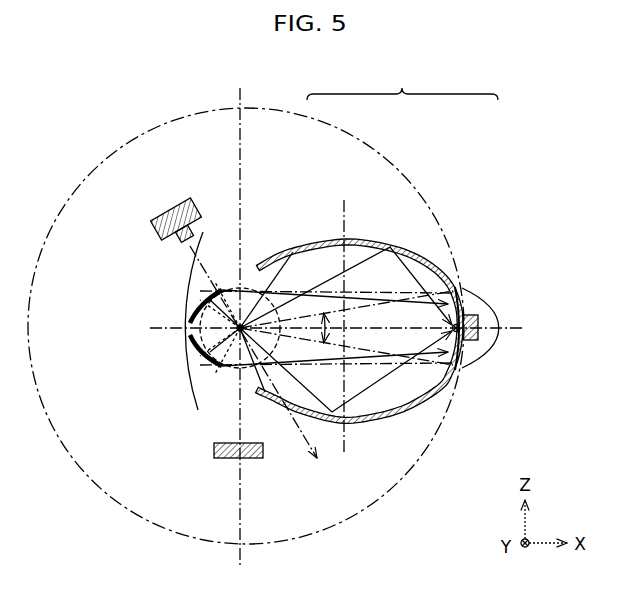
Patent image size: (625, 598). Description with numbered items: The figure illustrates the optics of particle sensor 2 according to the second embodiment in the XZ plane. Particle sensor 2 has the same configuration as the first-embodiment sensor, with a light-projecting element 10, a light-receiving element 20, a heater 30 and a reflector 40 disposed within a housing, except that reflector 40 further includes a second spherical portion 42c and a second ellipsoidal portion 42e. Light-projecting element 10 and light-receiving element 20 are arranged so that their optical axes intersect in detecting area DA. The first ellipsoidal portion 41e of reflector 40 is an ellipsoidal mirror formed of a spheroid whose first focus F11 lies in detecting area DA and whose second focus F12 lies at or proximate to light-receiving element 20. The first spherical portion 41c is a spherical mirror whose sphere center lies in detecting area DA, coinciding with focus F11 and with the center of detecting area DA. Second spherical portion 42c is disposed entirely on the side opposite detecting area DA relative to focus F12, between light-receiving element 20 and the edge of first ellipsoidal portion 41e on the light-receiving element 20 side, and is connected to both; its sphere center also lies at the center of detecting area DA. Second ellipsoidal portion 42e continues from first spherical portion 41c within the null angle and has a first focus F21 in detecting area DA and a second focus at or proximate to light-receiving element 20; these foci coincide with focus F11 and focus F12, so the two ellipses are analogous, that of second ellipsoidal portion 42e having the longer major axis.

The particle sensor 2 is at (525, 140).
The light-projecting element 10 is at (163, 210).
The light-receiving element 20 is at (478, 316).
The heater 30 is at (222, 460).
The reflector 40 is at (402, 84).
The first ellipsoidal portion 41e is at (370, 242).
The first spherical portion 41c is at (228, 262).
The second ellipsoidal portion 42e is at (203, 262).
The second spherical portion 42c is at (462, 288).
The detecting area DA is at (214, 361).
The focus (first focus) F11 is at (236, 336).
The focus (first focus) F21 is at (230, 372).
The focus (second focus) F12 is at (461, 371).